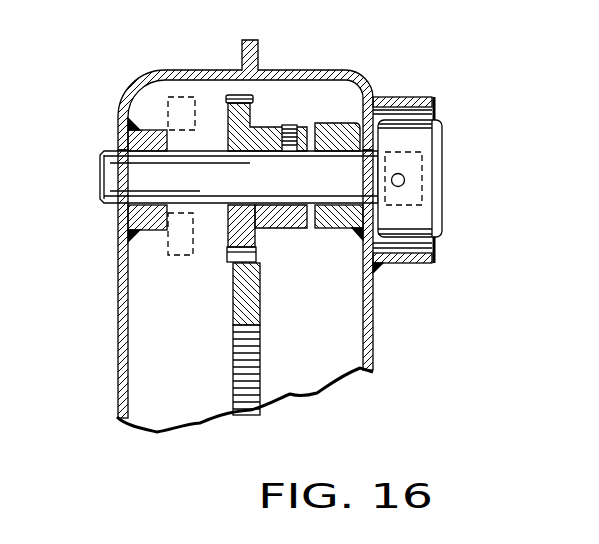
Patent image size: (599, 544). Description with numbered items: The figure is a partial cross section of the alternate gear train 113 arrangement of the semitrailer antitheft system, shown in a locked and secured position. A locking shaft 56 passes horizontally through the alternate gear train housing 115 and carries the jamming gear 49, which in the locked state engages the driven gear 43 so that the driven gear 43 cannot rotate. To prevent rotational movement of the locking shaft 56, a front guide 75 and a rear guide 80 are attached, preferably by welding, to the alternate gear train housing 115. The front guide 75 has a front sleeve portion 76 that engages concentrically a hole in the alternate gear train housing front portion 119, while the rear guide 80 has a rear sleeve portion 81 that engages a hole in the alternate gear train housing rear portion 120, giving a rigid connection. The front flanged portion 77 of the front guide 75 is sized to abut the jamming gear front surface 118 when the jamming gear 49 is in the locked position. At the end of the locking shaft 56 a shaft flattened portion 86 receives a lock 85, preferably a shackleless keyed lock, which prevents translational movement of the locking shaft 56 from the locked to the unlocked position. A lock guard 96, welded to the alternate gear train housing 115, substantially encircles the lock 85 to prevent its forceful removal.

The alternate gear train housing 115 is at (186, 71).
The rear guide 80 is at (141, 120).
The locking shaft 56 is at (100, 162).
The rear sleeve portion 81 is at (118, 210).
The jamming gear 49 is at (227, 232).
The alternate gear train housing rear portion 120 is at (128, 330).
The alternate gear train 113 is at (210, 418).
The driven gear 43 is at (260, 352).
The alternate gear train housing front portion 119 is at (363, 300).
The front flanged portion 77 is at (348, 229).
The jamming gear front surface 118 is at (323, 246).
The front sleeve portion 76 is at (360, 150).
The front guide 75 is at (341, 123).
The lock guard 96 is at (385, 97).
The shaft flattened portion 86 is at (422, 153).
The lock 85 is at (440, 205).